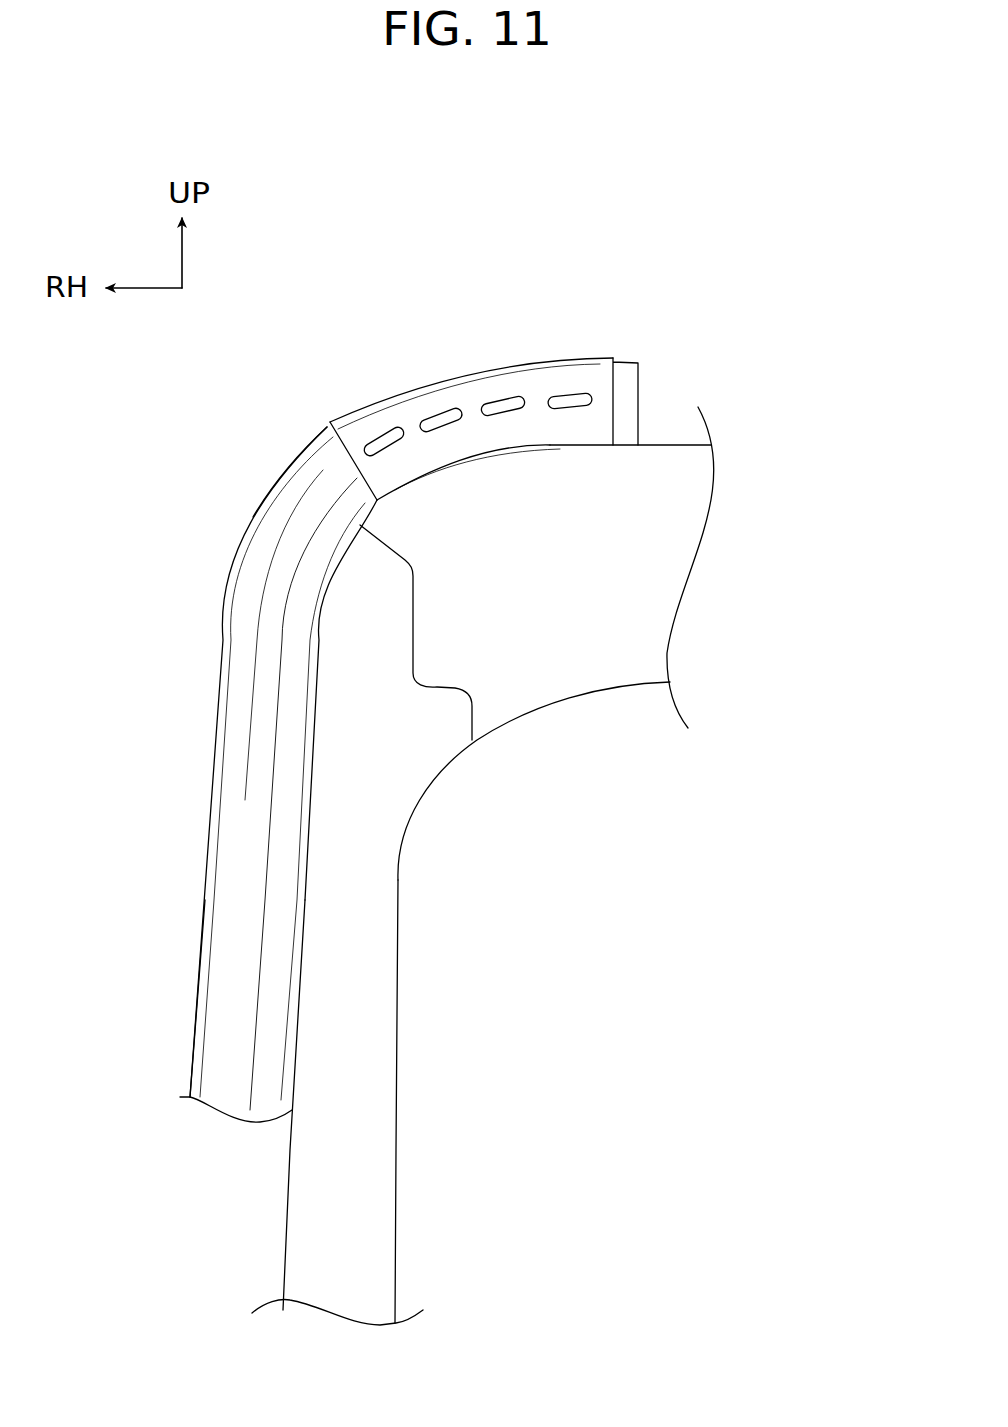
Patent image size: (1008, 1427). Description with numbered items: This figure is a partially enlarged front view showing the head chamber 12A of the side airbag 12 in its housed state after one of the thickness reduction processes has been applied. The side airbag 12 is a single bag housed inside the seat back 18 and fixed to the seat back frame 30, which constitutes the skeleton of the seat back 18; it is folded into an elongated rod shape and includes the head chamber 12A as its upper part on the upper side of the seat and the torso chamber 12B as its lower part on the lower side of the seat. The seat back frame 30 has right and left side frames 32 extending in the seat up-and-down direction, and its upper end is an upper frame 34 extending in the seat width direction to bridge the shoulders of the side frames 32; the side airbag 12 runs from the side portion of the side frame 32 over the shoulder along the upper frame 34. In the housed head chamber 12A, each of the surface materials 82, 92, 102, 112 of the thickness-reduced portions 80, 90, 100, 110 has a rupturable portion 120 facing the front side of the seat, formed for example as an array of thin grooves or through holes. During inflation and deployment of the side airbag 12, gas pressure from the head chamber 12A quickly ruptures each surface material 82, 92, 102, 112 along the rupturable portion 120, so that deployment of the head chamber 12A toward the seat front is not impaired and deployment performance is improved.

The side airbag 12 is at (216, 742).
The head chamber 12A is at (328, 438).
The torso chamber 12B is at (220, 937).
The seat back 18 is at (431, 1102).
The seat back frame 30 is at (402, 979).
The side frame 32 is at (367, 873).
The upper frame 34 is at (652, 555).
The thickness-reduced portion 80 is at (578, 339).
The thickness-reduced portion 90 is at (578, 339).
The thickness-reduced portion 100 is at (578, 339).
The thickness-reduced portion 110 is at (578, 339).
The surface material 82 is at (730, 350).
The surface material 92 is at (730, 350).
The surface material 102 is at (730, 350).
The surface material 112 is at (583, 358).
The rupturable portion 120 is at (500, 400).